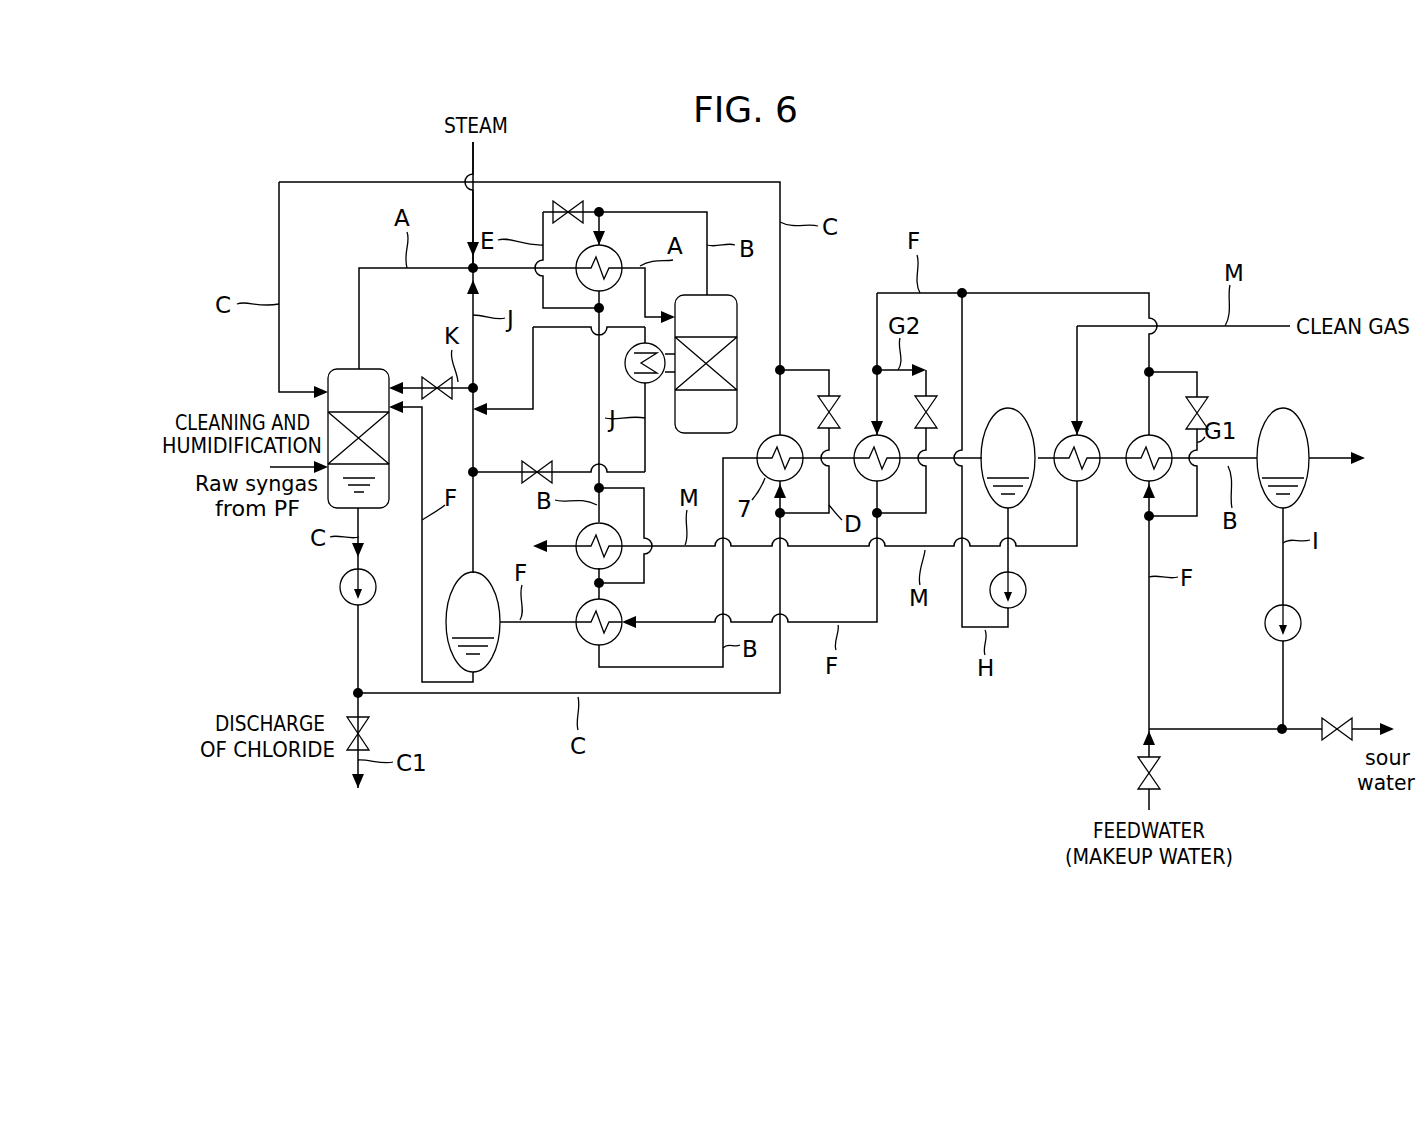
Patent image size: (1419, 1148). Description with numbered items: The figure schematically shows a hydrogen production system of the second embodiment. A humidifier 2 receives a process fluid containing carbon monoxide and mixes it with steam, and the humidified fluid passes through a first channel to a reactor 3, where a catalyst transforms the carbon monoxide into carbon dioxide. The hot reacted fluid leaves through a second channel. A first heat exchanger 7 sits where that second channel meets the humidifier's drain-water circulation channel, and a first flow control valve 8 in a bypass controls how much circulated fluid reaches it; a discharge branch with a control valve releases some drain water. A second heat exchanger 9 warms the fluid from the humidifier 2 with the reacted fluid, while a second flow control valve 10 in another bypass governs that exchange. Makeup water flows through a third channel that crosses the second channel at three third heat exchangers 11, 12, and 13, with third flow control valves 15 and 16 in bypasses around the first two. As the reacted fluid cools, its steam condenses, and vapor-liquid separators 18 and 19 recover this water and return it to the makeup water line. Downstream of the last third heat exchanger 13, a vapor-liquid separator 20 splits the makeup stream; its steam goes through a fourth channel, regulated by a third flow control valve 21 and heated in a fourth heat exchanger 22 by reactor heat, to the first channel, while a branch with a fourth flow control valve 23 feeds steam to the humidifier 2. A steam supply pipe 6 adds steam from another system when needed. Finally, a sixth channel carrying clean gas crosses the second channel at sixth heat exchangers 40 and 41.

The humidifier 2 is at (368, 366).
The reactor 3 is at (738, 323).
The steam supply pipe 6 is at (473, 214).
The first heat exchanger 7 is at (780, 458).
The first flow control valve 8 is at (830, 395).
The second heat exchanger 9 is at (613, 249).
The second flow control valve 10 is at (553, 212).
The third heat exchanger 11 is at (1135, 440).
The third heat exchanger 12 is at (885, 435).
The third heat exchanger 13 is at (624, 606).
The third flow control valve 15 is at (1200, 392).
The third flow control valve 16 is at (926, 395).
The vapor-liquid separator 18 is at (1010, 408).
The vapor-liquid separator 19 is at (1300, 415).
The vapor-liquid separator 20 is at (485, 573).
The third flow control valve 21 is at (545, 462).
The fourth heat exchanger 22 is at (654, 385).
The fourth flow control valve 23 is at (442, 401).
The sixth heat exchanger 40 is at (1092, 480).
The sixth heat exchanger 41 is at (583, 563).